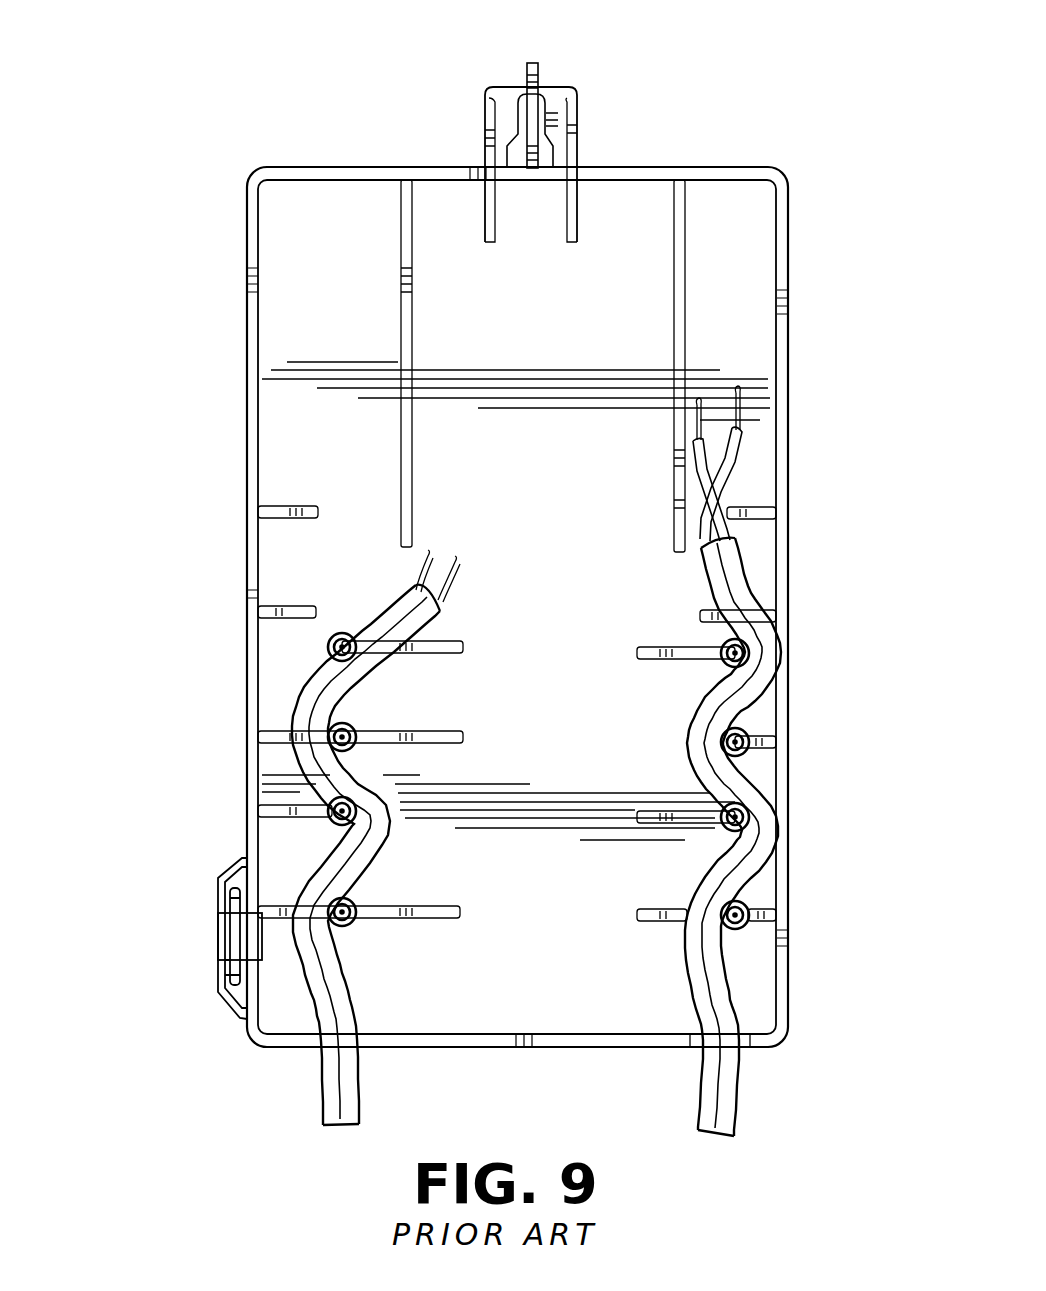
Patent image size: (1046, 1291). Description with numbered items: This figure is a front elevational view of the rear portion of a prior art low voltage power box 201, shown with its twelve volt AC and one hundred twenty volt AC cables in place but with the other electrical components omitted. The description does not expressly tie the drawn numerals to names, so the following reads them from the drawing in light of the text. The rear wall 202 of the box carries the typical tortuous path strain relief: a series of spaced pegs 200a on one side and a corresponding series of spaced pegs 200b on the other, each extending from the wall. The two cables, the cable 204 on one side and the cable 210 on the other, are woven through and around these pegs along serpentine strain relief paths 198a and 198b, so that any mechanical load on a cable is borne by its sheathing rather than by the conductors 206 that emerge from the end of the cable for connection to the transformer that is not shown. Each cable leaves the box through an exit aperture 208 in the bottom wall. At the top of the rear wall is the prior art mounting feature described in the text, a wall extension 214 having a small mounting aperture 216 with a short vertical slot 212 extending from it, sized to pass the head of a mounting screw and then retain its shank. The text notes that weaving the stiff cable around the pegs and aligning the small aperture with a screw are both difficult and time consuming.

The housing frame 201 is at (238, 425).
The housing interior 202 is at (540, 533).
The first cable 204 is at (735, 1102).
The conductor wires 206 is at (737, 440).
The cable exit opening 208 is at (698, 1056).
The second cable 210 is at (322, 1082).
The center contact pin 212 is at (545, 156).
The connector cap 214 is at (562, 87).
The contact insert 216 is at (522, 115).
The first cable routing path 198a is at (692, 945).
The second cable routing path 198b is at (358, 958).
The first set of grommets 200a is at (742, 735).
The second set of grommets 200b is at (330, 735).